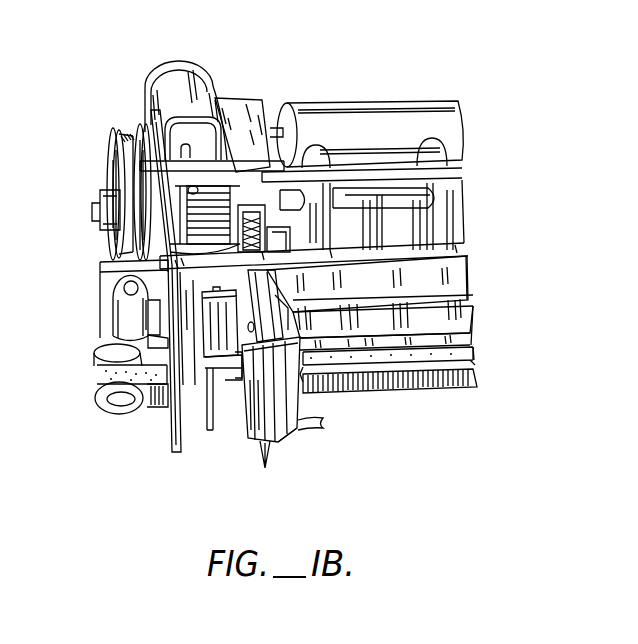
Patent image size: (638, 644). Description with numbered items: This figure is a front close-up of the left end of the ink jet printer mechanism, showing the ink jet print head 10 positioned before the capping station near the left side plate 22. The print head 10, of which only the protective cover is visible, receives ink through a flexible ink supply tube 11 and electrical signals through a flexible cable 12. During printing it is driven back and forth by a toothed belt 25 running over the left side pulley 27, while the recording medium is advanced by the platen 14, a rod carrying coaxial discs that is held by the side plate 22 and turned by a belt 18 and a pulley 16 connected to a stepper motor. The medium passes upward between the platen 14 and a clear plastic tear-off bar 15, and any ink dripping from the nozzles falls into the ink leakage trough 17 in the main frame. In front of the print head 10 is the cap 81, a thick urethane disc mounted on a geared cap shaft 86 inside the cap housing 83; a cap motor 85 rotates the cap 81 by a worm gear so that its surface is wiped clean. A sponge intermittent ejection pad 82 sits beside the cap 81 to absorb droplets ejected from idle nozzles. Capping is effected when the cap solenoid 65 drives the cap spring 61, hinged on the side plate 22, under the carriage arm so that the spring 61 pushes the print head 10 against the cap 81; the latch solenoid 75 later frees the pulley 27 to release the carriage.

The ink jet print head 10 is at (285, 428).
The flexible ink supply tube 11 is at (308, 430).
The flexible cable 12 is at (272, 455).
The platen 14 is at (477, 163).
The tear-off bar 15 is at (480, 207).
The pulley 16 is at (107, 172).
The ink leakage trough 17 is at (462, 290).
The belt 18 is at (127, 130).
The side plate 22 is at (168, 440).
The belt 25 is at (476, 378).
The left side pulley 27 is at (110, 415).
The cap spring 61 is at (232, 400).
The cap solenoid 65 is at (217, 347).
The latch solenoid 75 is at (123, 316).
The cap 81 is at (250, 212).
The intermittent ejection pad 82 is at (277, 233).
The cap housing 83 is at (260, 100).
The cap motor 85 is at (188, 74).
The cap shaft 86 is at (209, 205).